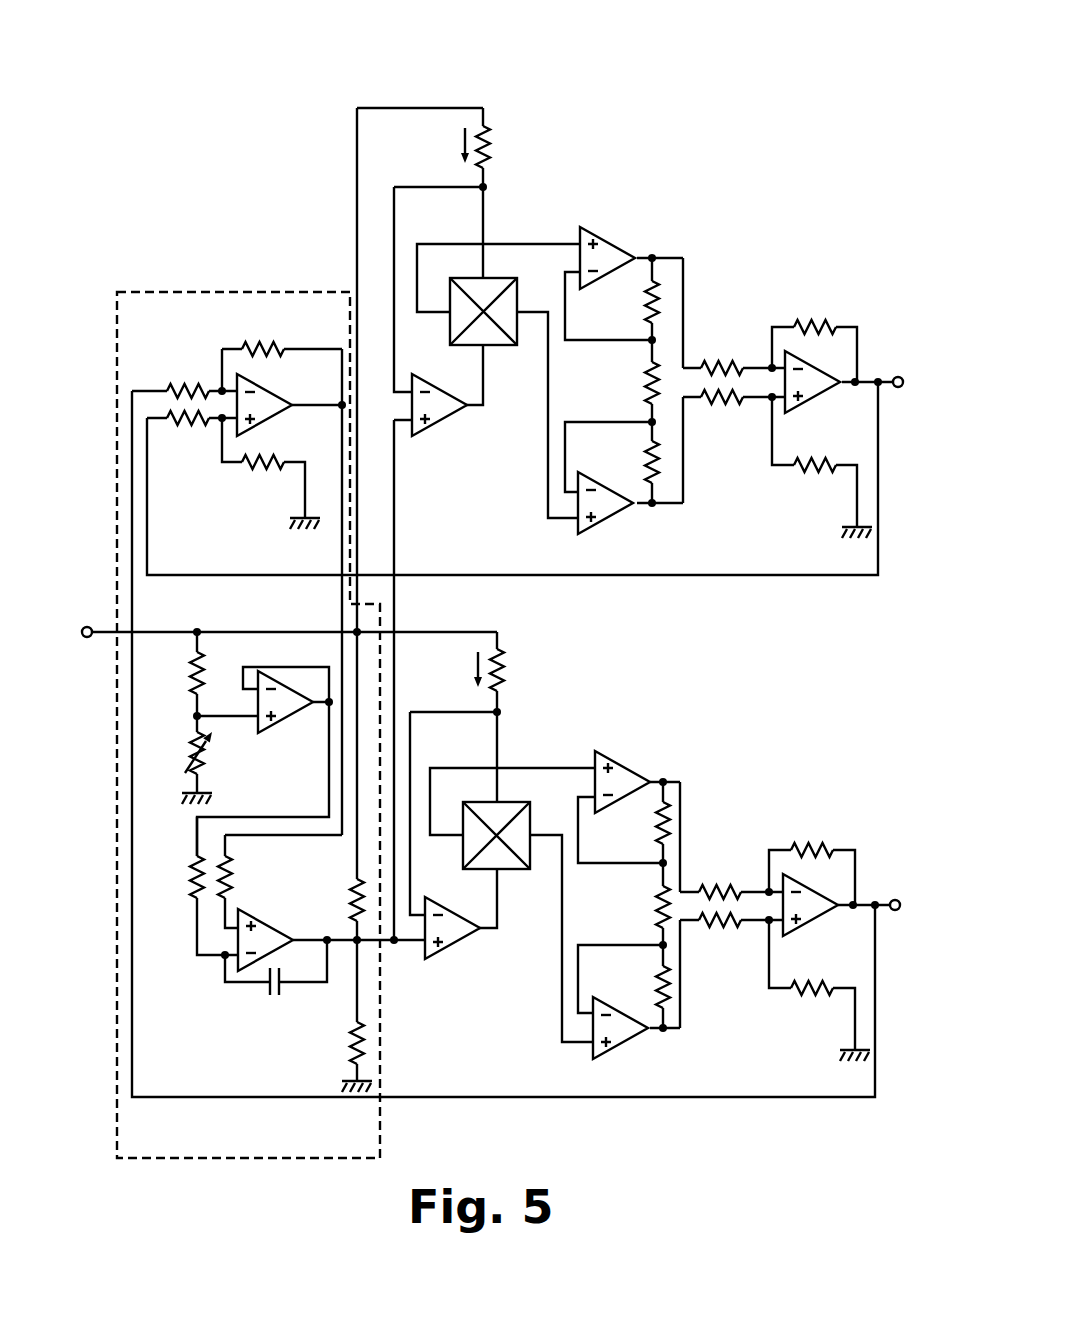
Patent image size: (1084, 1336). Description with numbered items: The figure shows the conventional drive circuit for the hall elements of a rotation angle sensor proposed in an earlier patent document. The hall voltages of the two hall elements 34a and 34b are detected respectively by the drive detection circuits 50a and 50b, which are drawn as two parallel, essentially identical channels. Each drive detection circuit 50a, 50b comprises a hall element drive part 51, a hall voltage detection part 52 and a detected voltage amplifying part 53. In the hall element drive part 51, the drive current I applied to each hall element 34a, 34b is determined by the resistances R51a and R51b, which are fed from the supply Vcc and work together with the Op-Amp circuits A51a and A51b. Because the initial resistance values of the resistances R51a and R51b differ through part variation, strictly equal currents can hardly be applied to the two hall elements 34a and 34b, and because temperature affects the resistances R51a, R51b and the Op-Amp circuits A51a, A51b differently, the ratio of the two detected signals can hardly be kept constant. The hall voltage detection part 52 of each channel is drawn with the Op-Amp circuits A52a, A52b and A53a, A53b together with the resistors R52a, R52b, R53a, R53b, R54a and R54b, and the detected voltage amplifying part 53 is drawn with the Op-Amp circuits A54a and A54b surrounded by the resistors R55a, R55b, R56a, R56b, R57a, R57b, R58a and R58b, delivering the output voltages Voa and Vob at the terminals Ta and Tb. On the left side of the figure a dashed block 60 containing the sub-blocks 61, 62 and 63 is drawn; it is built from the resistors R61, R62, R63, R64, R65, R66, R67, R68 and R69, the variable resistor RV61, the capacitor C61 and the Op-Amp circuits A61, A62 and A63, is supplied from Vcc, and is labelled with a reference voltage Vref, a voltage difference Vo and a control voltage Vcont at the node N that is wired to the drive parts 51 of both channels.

The control voltage generating circuit 60 is at (183, 282).
The differential amplifier circuit 61 is at (325, 388).
The reference voltage buffer circuit 62 is at (305, 660).
The integrating circuit 63 is at (202, 1072).
The drive detection circuit 50a is at (675, 682).
The drive detection circuit 50b is at (661, 157).
The hall element drive part 51 is at (463, 228).
The hall voltage detection part 52 is at (612, 175).
The detected voltage amplifying part 53 is at (835, 263).
The hall element 34a is at (520, 868).
The hall element 34b is at (507, 345).
The resistance R51a is at (492, 773).
The resistance R51b is at (478, 193).
The resistor R52a is at (624, 824).
The resistor R52b is at (612, 301).
The resistor R53a is at (624, 938).
The resistor R53b is at (612, 416).
The resistor R54a is at (633, 988).
The resistor R54b is at (629, 464).
The resistor R55a is at (731, 876).
The resistor R55b is at (734, 353).
The resistor R56a is at (731, 937).
The resistor R56b is at (734, 414).
The resistor R57a is at (812, 859).
The resistor R57b is at (814, 337).
The resistor R58a is at (819, 990).
The resistor R58b is at (822, 467).
The Op-Amp circuit A51a is at (447, 948).
The Op-Amp circuit A51b is at (440, 430).
The operational amplifier A52a is at (643, 748).
The operational amplifier A52b is at (628, 222).
The operational amplifier A53a is at (618, 1047).
The operational amplifier A53b is at (605, 528).
The operational amplifier A54a is at (807, 928).
The operational amplifier A54b is at (810, 407).
The resistor R61 is at (184, 377).
The resistor R62 is at (192, 436).
The resistor R63 is at (282, 573).
The resistor R64 is at (271, 473).
The resistor R65 is at (171, 676).
The resistor R66 is at (187, 888).
The resistor R67 is at (280, 881).
The resistor R68 is at (329, 909).
The resistor R69 is at (333, 1016).
The variable resistor RV61 is at (229, 760).
The capacitor C61 is at (276, 984).
The operational amplifier A61 is at (272, 422).
The operational amplifier A62 is at (290, 720).
The operational amplifier A63 is at (267, 922).
The supply voltage terminal Vcc is at (281, 618).
The reference voltage Vref is at (227, 703).
The output voltage difference Vo is at (219, 940).
The node N is at (399, 991).
The control voltage Vcont is at (400, 1027).
The output voltage Vob is at (900, 368).
The output voltage Voa is at (898, 891).
The output terminal Ta is at (895, 912).
The output terminal Tb is at (898, 388).
The drive current I is at (457, 145).